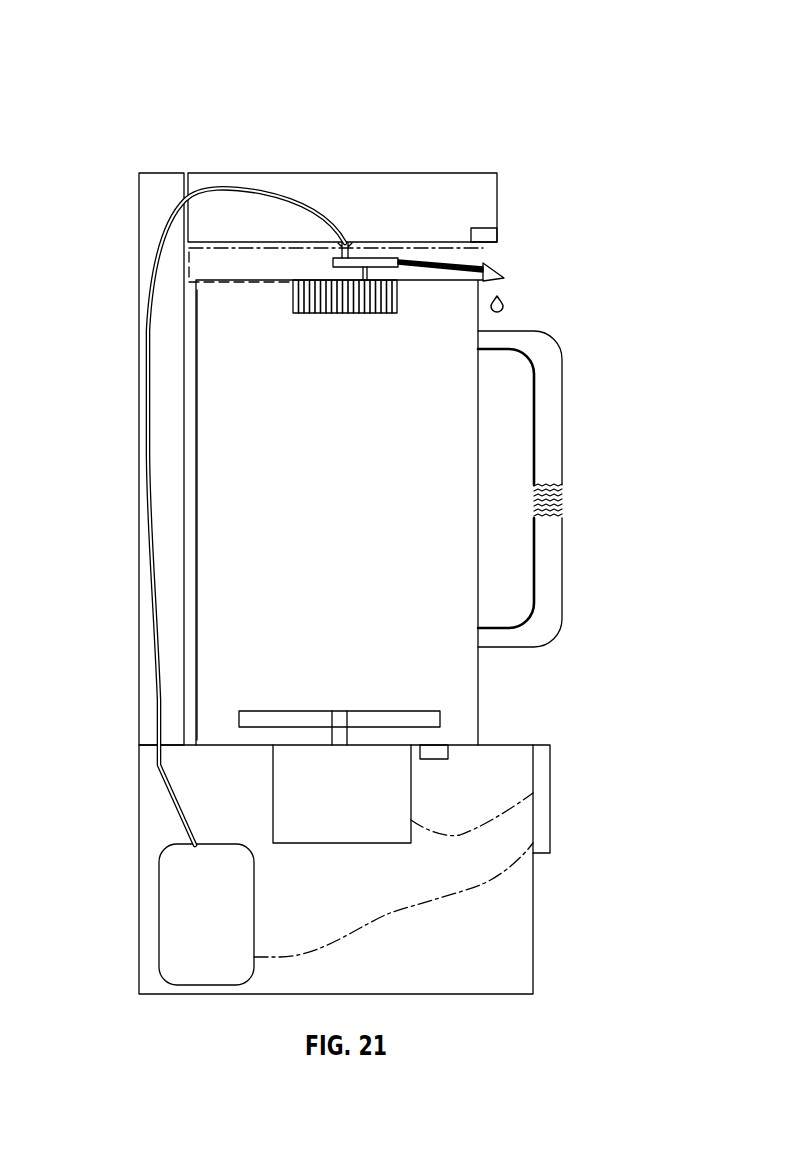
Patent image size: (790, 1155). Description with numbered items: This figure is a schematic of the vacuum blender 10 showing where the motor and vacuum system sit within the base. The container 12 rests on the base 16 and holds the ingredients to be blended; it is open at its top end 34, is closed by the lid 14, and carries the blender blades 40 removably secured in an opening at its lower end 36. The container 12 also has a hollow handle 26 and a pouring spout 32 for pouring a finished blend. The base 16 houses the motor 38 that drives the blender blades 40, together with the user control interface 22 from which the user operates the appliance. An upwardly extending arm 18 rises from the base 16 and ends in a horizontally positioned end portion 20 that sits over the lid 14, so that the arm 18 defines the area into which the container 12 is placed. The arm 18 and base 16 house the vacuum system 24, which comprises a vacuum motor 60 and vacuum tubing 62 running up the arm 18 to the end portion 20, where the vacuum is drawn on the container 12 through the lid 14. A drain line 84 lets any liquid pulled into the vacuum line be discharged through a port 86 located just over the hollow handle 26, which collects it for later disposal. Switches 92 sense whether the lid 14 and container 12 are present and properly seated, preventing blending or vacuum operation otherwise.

The vacuum blender 10 is at (592, 91).
The container 12 is at (377, 506).
The lid 14 is at (468, 259).
The base 16 is at (510, 952).
The arm 18 is at (152, 202).
The horizontally positioned end portion 20 is at (400, 188).
The user control interface 22 is at (537, 765).
The vacuum system 24 is at (161, 834).
The handle 26 is at (547, 428).
The pouring spout 32 is at (203, 294).
The top end 34 is at (445, 312).
The lower end 36 is at (215, 705).
The motor 38 is at (310, 814).
The blender blades 40 is at (358, 711).
The vacuum motor 60 is at (220, 919).
The vacuum tubing 62 is at (148, 558).
The drain line 84 is at (425, 263).
The port 86 is at (504, 277).
The switch 92 is at (488, 228).